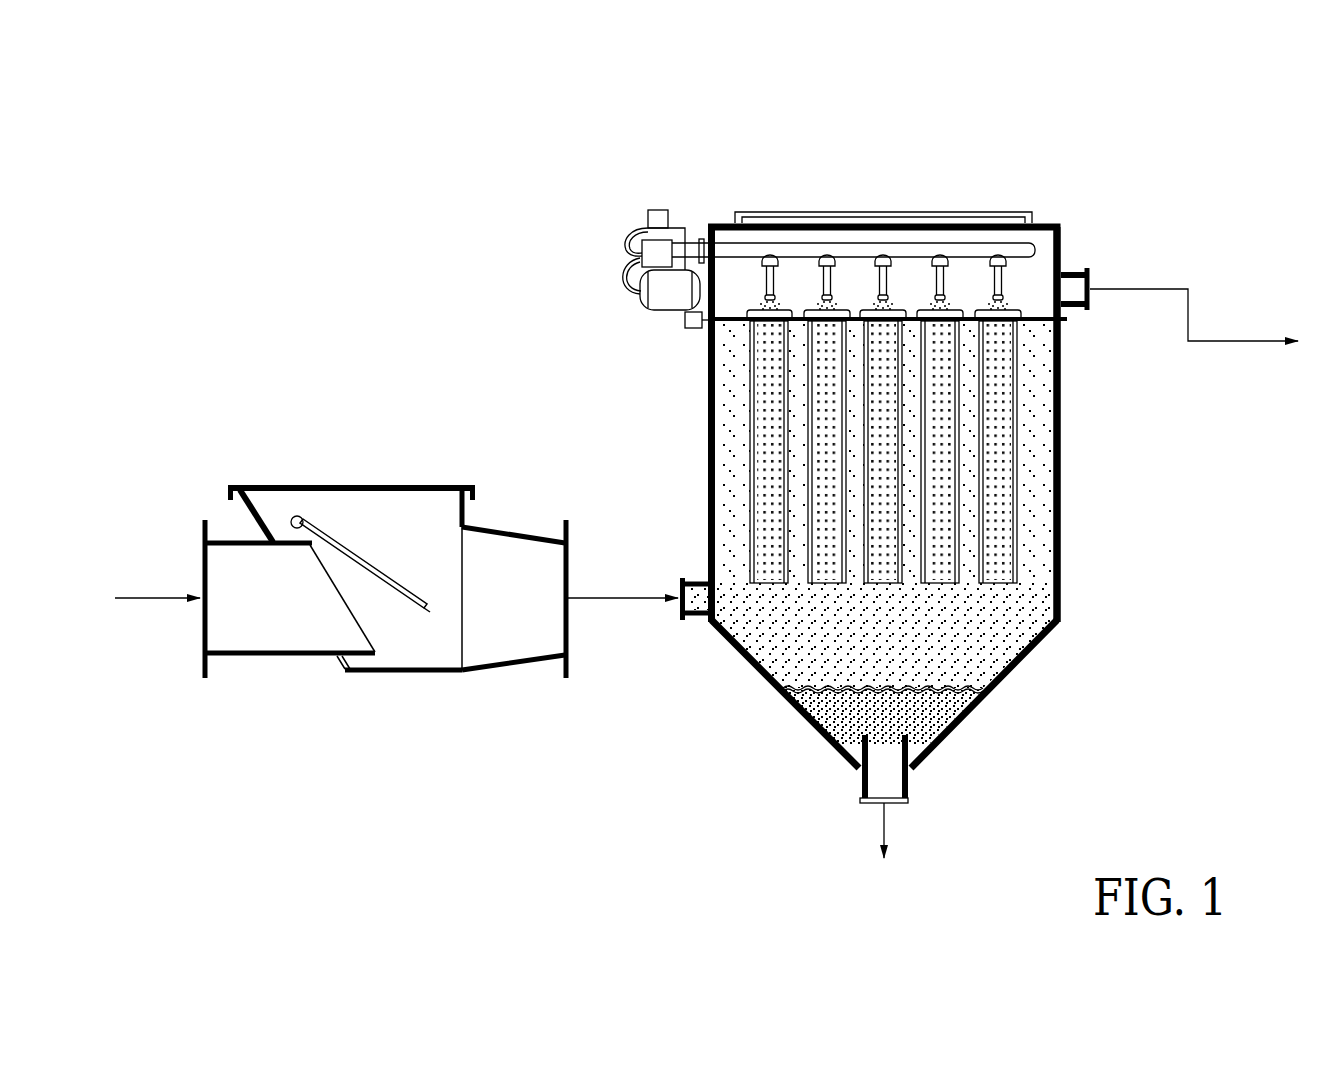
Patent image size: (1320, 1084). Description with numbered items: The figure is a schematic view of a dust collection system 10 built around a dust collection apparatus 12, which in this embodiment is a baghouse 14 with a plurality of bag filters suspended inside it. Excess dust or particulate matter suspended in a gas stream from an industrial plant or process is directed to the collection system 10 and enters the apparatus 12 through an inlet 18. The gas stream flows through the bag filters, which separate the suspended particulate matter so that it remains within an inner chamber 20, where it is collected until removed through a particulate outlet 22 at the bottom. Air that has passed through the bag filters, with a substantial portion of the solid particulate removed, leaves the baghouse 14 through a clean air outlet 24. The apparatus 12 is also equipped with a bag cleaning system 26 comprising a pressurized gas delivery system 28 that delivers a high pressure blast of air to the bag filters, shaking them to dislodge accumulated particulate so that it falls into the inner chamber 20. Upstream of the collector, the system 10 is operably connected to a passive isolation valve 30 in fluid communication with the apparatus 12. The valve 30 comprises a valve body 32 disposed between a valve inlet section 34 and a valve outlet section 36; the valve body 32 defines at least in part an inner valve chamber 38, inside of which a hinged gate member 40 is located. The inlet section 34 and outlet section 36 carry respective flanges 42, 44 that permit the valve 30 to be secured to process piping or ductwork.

The dust collection system 10 is at (410, 205).
The dust collection apparatus 12 is at (735, 178).
The baghouse 14 is at (1063, 518).
The inlet 18 is at (680, 605).
The inner chamber 20 is at (1017, 627).
The particulate outlet 22 is at (897, 805).
The clean air outlet 24 is at (1090, 282).
The bag cleaning system 26 is at (620, 222).
The pressurized gas delivery system 28 is at (905, 257).
The passive isolation valve 30 is at (258, 462).
The valve body 32 is at (413, 672).
The valve inlet section 34 is at (275, 657).
The valve outlet section 36 is at (510, 672).
The inner valve chamber 38 is at (418, 508).
The hinged gate member 40 is at (380, 568).
The flange 42 is at (200, 668).
The flange 44 is at (570, 668).